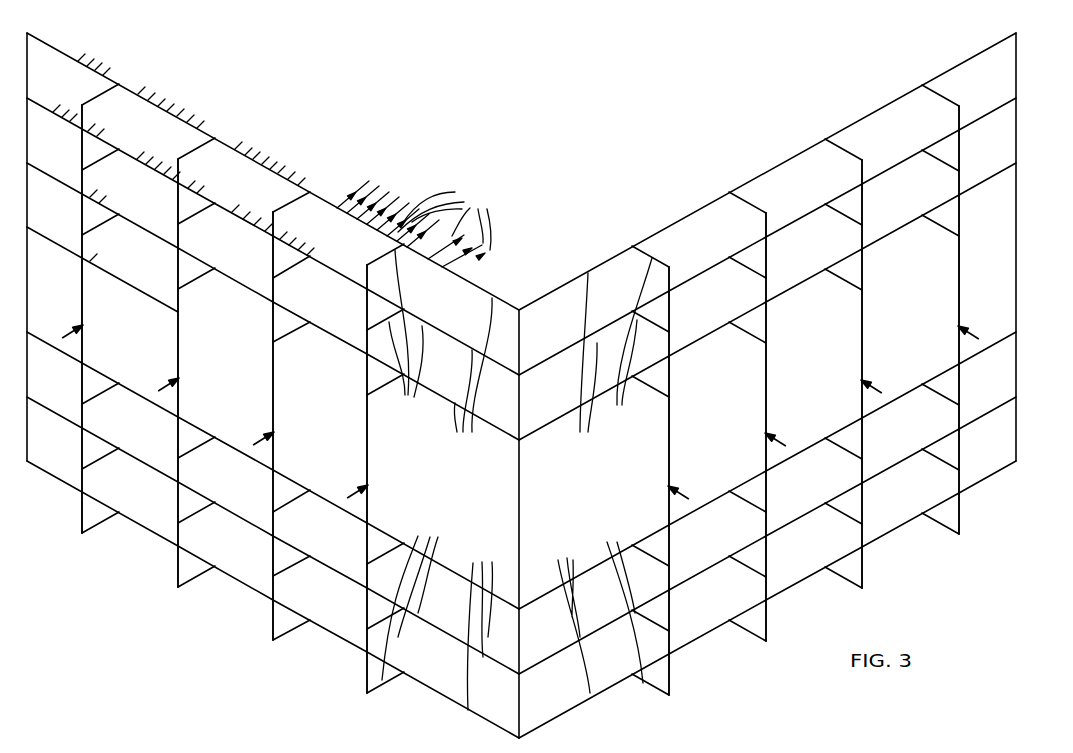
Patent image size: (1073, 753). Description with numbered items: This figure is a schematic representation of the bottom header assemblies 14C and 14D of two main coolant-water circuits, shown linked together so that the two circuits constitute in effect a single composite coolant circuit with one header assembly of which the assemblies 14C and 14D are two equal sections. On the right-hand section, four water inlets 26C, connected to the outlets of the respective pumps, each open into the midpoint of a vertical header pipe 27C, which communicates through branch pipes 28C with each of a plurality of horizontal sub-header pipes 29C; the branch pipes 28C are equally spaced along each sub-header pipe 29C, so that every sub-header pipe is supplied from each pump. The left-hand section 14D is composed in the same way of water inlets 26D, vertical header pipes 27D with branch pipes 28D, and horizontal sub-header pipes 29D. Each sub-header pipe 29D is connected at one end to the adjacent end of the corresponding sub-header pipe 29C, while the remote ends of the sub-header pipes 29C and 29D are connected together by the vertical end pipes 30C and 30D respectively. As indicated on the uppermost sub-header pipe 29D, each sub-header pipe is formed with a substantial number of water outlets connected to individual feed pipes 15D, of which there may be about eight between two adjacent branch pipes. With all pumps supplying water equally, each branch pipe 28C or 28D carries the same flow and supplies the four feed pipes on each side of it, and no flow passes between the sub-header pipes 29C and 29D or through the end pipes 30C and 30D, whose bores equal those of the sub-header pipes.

The bottom header assembly 14D is at (310, 145).
The bottom header assembly 14C is at (729, 167).
The individual feed pipes 15D is at (421, 224).
The water inlets 26D is at (158, 366).
The water inlets 26C is at (760, 440).
The vertical header pipe 27D is at (84, 279).
The vertical header pipe 27C is at (766, 388).
The branch pipes 28D is at (416, 465).
The branch pipes 28C is at (619, 470).
The sub-header pipes 29D is at (473, 504).
The sub-header pipes 29C is at (568, 483).
The vertical end pipe 30D is at (31, 276).
The vertical end pipe 30C is at (1017, 258).